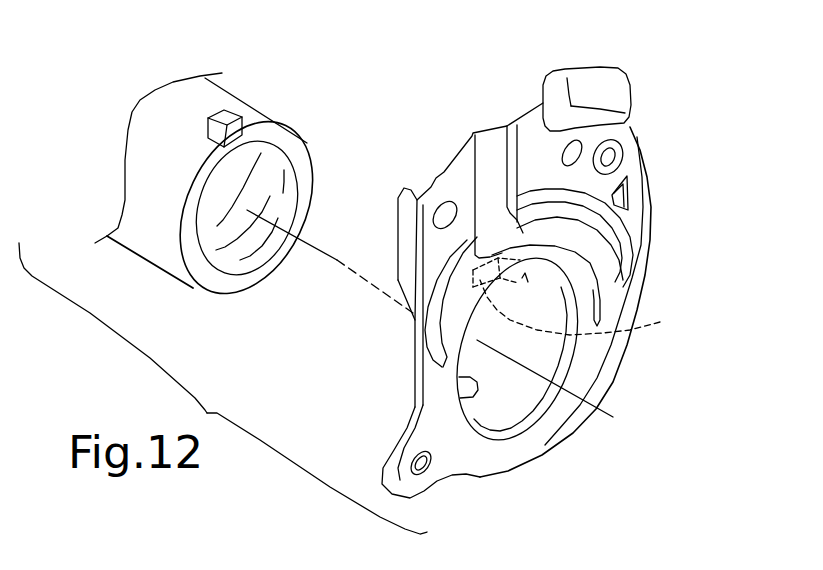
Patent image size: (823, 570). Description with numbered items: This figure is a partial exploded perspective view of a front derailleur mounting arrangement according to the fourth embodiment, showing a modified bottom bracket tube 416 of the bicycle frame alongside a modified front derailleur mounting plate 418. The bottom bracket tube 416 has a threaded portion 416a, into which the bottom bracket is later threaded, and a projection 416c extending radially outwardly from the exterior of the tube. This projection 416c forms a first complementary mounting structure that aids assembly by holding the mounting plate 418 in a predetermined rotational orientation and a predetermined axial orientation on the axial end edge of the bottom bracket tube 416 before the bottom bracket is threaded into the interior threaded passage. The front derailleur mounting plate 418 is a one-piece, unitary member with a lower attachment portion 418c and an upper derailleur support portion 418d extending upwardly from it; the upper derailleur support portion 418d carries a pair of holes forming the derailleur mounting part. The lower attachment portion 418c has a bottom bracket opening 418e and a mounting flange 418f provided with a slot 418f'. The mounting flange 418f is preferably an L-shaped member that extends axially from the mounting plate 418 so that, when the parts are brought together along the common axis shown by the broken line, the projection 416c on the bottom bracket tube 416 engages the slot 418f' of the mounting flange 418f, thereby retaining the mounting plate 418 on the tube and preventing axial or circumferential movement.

The bottom bracket tube 416 is at (238, 88).
The threaded portion 416a is at (282, 195).
The projection 416c is at (233, 112).
The front derailleur mounting plate 418 is at (655, 168).
The lower attachment portion 418c is at (577, 378).
The upper derailleur support portion 418d is at (515, 123).
The bottom bracket opening 418e is at (459, 377).
The mounting flange 418f is at (629, 244).
The slot 418f' is at (610, 307).